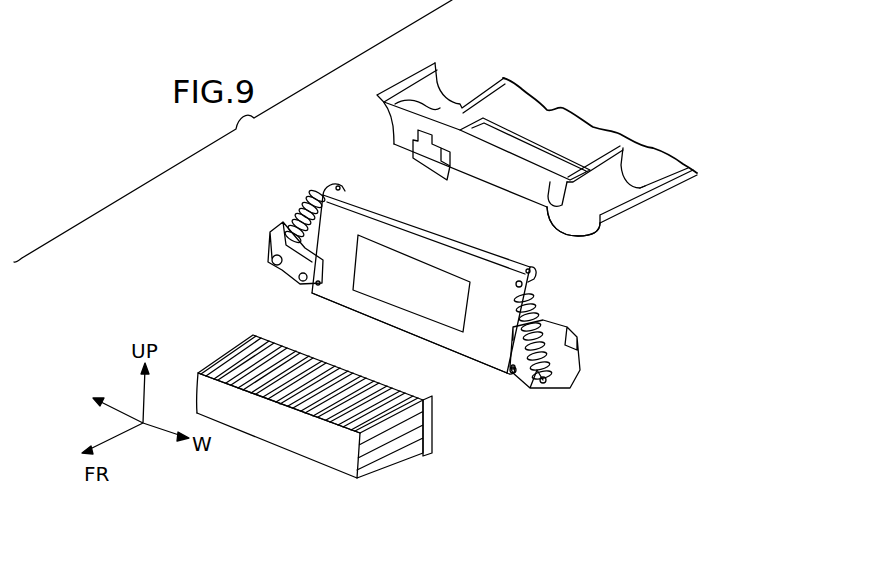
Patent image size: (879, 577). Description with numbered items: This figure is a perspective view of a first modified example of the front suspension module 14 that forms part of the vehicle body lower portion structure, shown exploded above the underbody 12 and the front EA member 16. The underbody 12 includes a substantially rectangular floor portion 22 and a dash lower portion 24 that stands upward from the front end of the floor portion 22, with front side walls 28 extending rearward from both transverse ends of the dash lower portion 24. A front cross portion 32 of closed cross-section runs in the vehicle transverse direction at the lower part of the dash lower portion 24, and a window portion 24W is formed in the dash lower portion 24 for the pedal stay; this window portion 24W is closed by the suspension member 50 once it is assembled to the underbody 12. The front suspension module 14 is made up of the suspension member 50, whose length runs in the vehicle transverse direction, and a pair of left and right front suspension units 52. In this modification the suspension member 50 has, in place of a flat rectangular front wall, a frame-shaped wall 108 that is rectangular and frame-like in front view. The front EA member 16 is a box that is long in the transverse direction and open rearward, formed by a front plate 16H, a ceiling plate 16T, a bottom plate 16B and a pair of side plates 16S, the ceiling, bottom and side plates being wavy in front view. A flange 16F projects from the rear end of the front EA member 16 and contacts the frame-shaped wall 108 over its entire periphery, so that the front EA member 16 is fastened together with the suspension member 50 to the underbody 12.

The underbody 12 is at (528, 150).
The front suspension module 14 is at (514, 393).
The front EA member 16 is at (337, 409).
The ceiling plate 16T is at (248, 358).
The side plates 16S is at (196, 380).
The front plate 16H is at (257, 423).
The bottom plate 16B is at (298, 460).
The flange 16F is at (434, 432).
The floor portion 22 is at (657, 170).
The dash lower portion 24 is at (553, 223).
The front cross portion 32 is at (573, 221).
The window portion 24W is at (425, 167).
The front side walls 28 is at (441, 93).
The suspension member 50 is at (424, 303).
The front suspension units 52 is at (459, 295).
The frame-shaped wall 108 is at (483, 355).